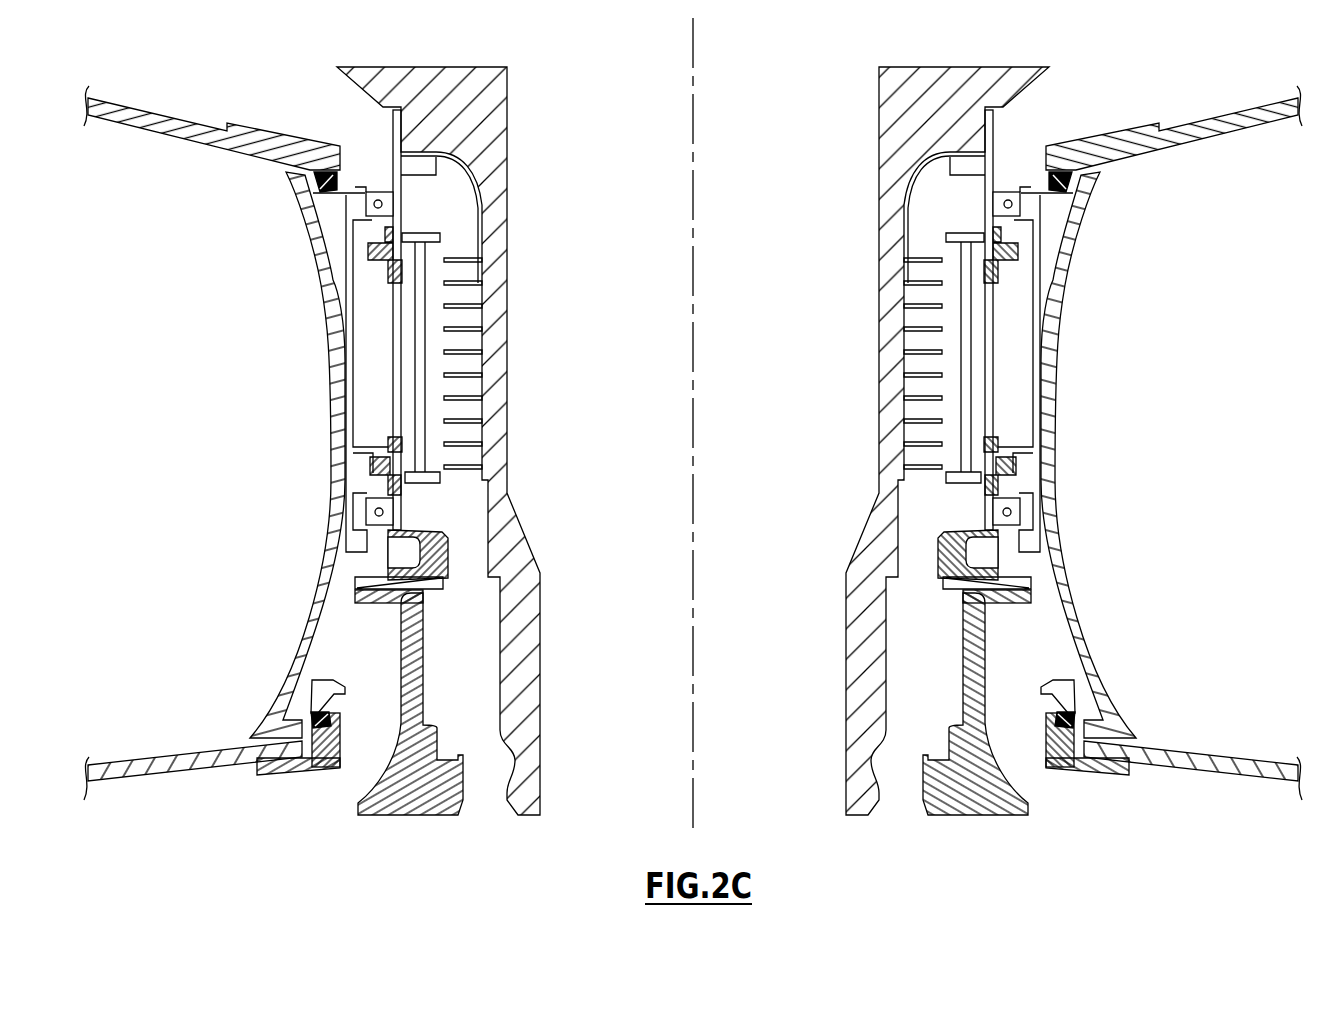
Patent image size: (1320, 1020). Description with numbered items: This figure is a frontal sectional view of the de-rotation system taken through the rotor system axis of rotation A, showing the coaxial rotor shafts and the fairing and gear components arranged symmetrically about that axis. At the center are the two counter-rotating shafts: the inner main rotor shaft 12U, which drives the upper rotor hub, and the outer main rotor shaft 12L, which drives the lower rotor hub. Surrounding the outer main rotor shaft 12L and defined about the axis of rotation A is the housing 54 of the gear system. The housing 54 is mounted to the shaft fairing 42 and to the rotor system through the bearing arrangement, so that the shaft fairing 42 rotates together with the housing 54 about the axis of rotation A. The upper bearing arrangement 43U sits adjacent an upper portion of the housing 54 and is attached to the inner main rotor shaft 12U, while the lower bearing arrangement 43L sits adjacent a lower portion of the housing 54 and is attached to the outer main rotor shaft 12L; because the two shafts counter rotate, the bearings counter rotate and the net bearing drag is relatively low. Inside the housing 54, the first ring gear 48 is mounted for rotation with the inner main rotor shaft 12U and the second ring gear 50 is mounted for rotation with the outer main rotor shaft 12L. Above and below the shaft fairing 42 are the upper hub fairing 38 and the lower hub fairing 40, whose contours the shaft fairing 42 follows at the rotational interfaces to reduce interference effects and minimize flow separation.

The inner main rotor shaft 12U is at (494, 132).
The outer main rotor shaft 12L is at (415, 607).
The axis of rotation A is at (693, 126).
The upper bearing arrangement 43U is at (1007, 198).
The upper hub fairing 38 is at (1174, 153).
The first ring gear 48 is at (1017, 257).
The housing 54 is at (1036, 291).
The shaft fairing 42 is at (1048, 431).
The second ring gear 50 is at (1014, 464).
The lower bearing arrangement 43L is at (1012, 512).
The lower hub fairing 40 is at (1208, 745).